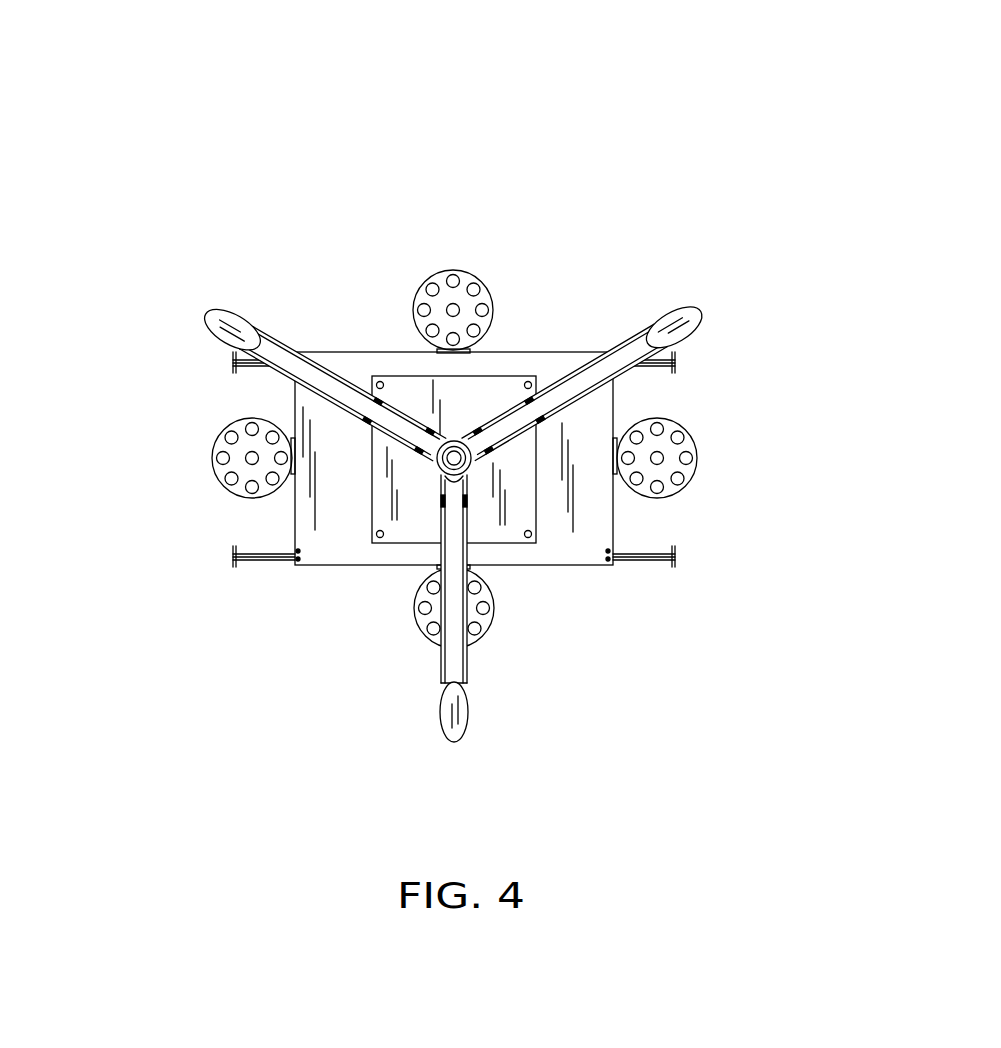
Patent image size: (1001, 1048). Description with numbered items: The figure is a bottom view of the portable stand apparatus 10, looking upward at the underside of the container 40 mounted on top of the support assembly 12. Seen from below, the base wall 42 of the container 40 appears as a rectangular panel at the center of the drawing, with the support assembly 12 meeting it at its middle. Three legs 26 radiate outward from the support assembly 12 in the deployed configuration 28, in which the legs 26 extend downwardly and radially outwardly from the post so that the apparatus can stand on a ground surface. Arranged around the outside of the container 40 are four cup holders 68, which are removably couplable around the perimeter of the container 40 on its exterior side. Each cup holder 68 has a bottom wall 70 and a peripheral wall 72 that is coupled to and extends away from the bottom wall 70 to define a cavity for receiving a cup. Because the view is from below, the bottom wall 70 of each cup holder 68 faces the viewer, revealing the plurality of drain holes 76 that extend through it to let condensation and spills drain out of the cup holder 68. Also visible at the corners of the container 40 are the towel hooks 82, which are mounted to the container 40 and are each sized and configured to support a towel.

The portable stand apparatus 10 is at (222, 100).
The support assembly 12 is at (403, 482).
The legs 26 is at (275, 340).
The deployed configuration 28 is at (765, 318).
The container 40 is at (310, 325).
The base wall 42 is at (360, 368).
The cup holders 68 is at (478, 245).
The bottom wall 70 is at (444, 276).
The peripheral wall 72 is at (495, 302).
The drain holes 76 is at (423, 308).
The towel hooks 82 is at (233, 360).